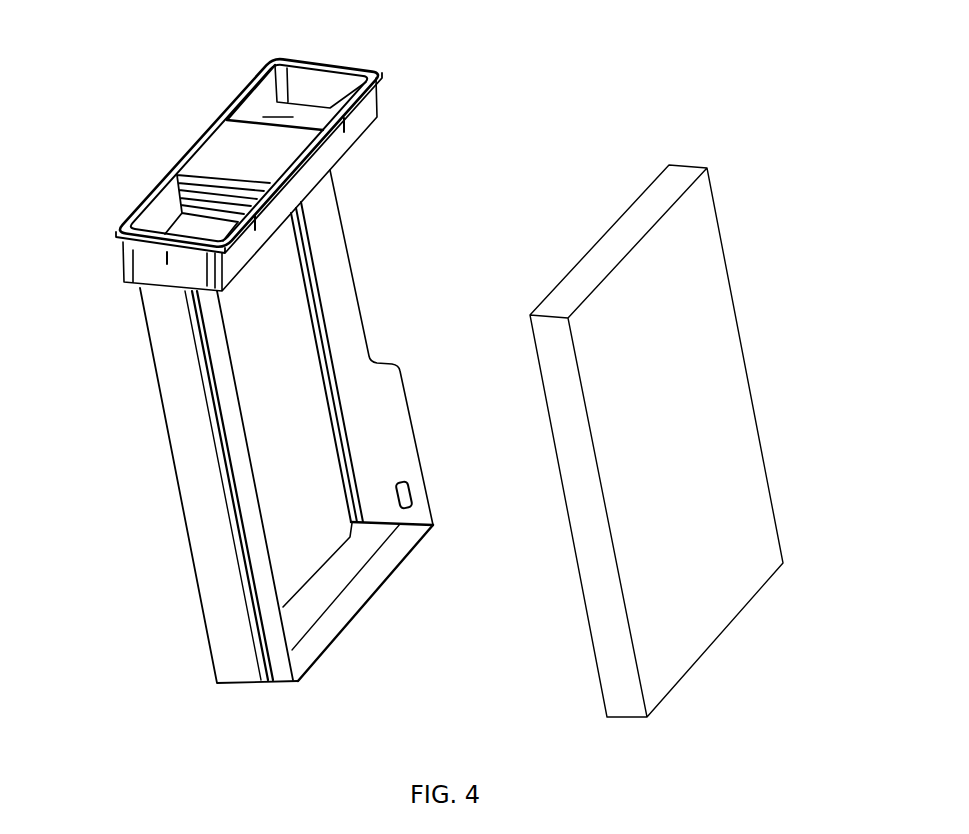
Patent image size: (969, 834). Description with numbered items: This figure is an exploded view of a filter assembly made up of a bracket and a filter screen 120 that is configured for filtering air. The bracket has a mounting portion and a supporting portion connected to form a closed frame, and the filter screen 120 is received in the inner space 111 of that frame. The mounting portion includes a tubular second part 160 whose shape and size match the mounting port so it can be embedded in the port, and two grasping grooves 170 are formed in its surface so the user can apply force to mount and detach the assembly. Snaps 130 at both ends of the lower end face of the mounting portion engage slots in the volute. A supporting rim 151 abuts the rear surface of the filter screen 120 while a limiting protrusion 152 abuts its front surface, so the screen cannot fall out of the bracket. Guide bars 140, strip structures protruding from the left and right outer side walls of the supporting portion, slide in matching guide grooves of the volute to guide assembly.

The inner space 111 is at (293, 352).
The filter screen 120 is at (717, 395).
The snap 130 is at (188, 298).
The guide bar 140 is at (210, 404).
The supporting rim 151 is at (350, 537).
The limiting protrusion 152 is at (413, 502).
The second part 160 is at (367, 116).
The grasping groove 170 is at (285, 117).